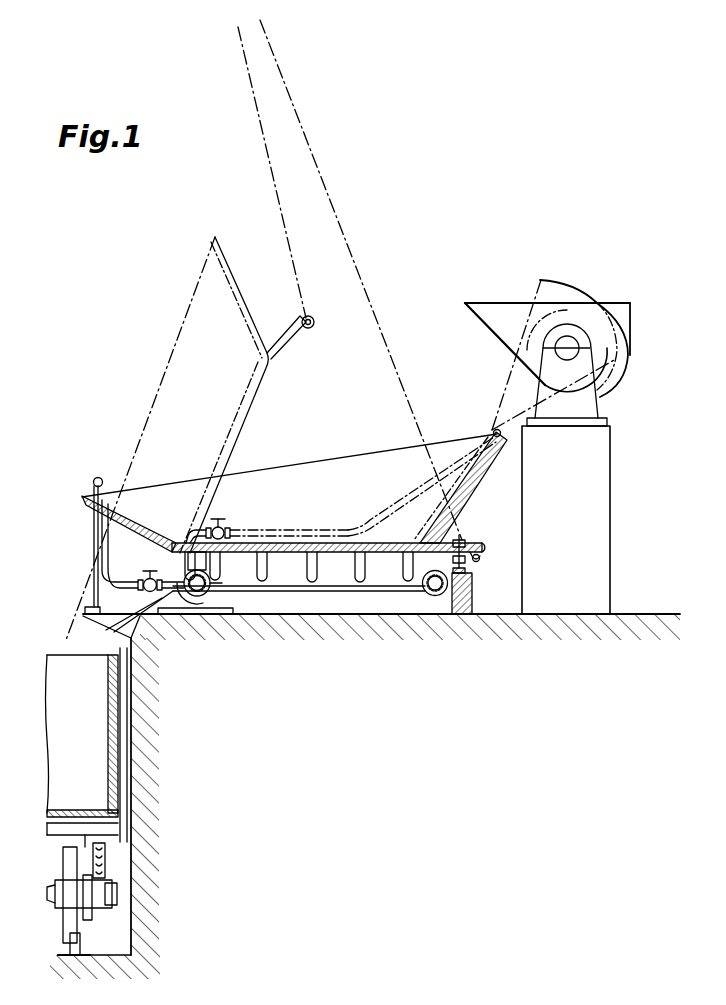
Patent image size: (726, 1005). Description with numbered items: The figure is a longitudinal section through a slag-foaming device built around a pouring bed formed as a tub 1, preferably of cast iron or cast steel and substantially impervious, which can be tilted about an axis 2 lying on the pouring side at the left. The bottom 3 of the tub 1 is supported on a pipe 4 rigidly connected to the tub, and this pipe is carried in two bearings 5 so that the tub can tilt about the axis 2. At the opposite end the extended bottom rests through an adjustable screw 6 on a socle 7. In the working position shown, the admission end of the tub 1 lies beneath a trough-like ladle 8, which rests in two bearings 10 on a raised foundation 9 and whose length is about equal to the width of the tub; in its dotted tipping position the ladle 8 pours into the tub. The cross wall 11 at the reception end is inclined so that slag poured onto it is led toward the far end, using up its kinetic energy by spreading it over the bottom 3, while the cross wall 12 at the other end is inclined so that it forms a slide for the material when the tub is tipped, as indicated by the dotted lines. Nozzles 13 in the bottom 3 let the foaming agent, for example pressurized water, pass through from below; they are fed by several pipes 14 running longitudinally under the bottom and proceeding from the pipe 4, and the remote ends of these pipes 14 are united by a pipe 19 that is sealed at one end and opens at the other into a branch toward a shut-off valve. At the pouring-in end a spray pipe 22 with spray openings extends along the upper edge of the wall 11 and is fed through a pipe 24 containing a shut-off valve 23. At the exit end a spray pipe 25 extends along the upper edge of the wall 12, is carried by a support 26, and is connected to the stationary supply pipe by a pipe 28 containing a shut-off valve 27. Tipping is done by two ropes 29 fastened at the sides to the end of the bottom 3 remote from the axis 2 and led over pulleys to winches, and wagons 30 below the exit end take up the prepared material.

The tub 1 is at (330, 468).
The axis 2 is at (199, 598).
The bottom 3 is at (338, 543).
The pipe 4 is at (212, 590).
The bearings 5 is at (212, 603).
The adjustable screw 6 is at (479, 563).
The socle 7 is at (473, 598).
The ladle 8 is at (515, 315).
The raised foundation 9 is at (609, 493).
The bearings 10 is at (597, 404).
The cross wall 11 is at (477, 481).
The cross wall 12 is at (150, 531).
The nozzles 13 is at (263, 543).
The pipes 14 is at (340, 591).
The pipe 19 is at (435, 596).
The spray pipe 22 is at (494, 431).
The shut off valve 23 is at (220, 525).
The pipe 24 is at (392, 511).
The spray pipe 25 is at (98, 477).
The support 26 is at (100, 546).
The shut off valve 27 is at (150, 577).
The pipe 28 is at (120, 582).
The ropes 29 is at (405, 357).
The wagons 30 is at (108, 743).